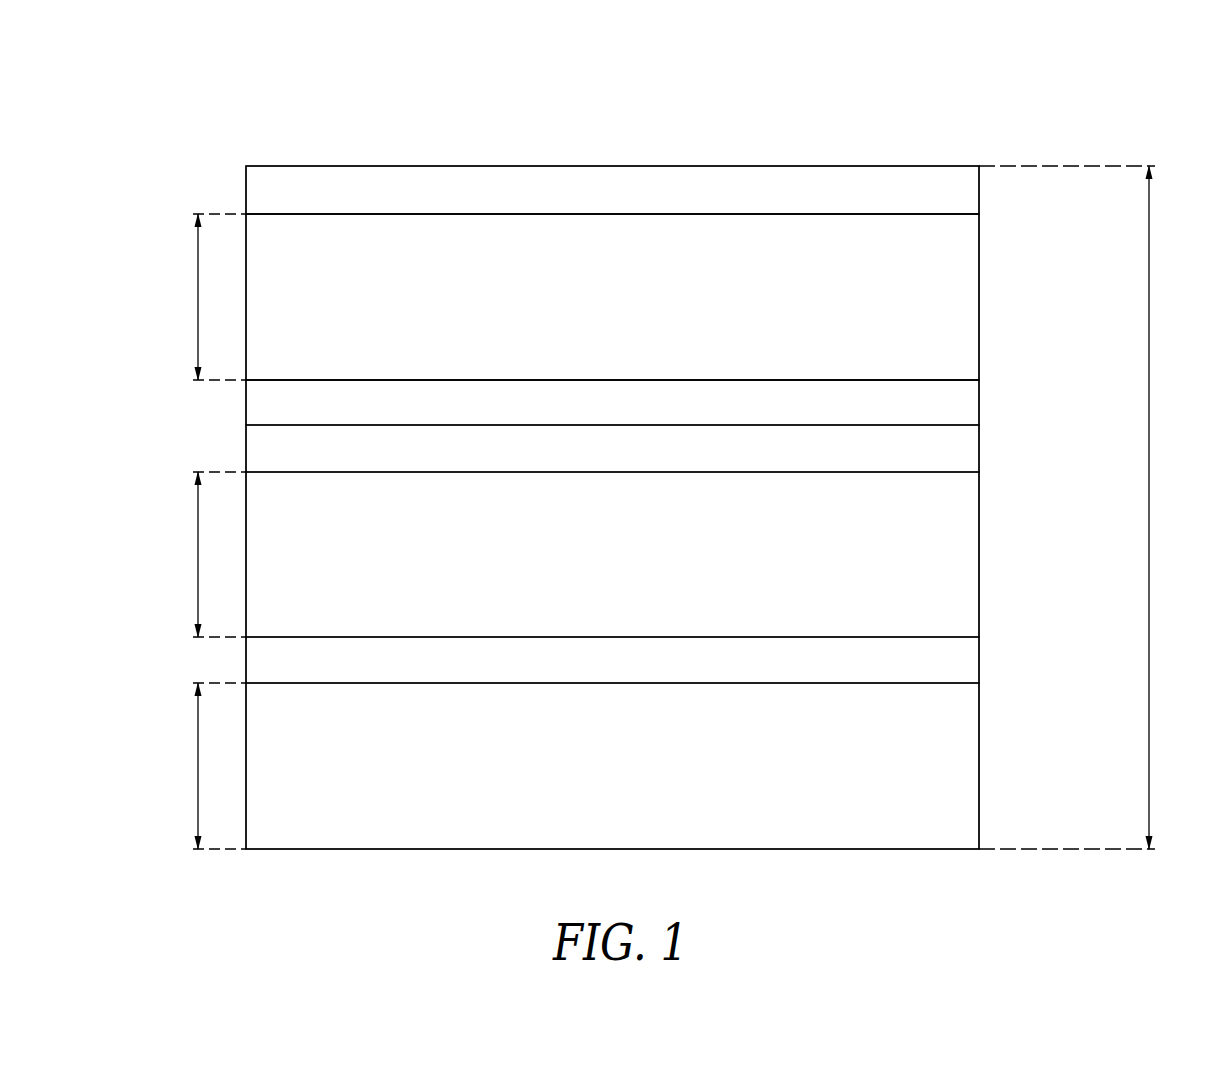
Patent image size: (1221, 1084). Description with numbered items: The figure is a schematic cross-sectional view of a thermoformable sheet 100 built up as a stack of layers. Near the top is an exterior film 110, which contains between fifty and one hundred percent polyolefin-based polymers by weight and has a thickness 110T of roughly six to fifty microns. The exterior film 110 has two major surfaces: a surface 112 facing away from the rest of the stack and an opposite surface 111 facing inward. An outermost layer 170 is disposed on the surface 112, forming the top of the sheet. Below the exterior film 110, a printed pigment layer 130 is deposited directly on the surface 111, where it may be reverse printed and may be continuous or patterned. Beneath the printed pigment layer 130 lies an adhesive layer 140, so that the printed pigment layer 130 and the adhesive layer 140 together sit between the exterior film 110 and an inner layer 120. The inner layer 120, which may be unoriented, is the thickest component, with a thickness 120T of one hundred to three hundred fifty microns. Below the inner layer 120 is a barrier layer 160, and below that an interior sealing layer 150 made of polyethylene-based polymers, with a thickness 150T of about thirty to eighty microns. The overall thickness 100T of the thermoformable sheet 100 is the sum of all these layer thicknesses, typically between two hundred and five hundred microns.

The thermoformable sheet 100 is at (200, 96).
The exterior film 110 is at (962, 296).
The surface 111 is at (297, 380).
The surface 112 is at (273, 213).
The inner layer 120 is at (960, 559).
The printed pigment layer 130 is at (962, 402).
The adhesive layer 140 is at (962, 449).
The interior sealing layer 150 is at (960, 765).
The barrier layer 160 is at (962, 660).
The outermost layer 170 is at (962, 189).
The thickness 110T is at (197, 297).
The thickness 120T is at (195, 554).
The thickness 150T is at (195, 766).
The thickness 100T is at (1095, 507).